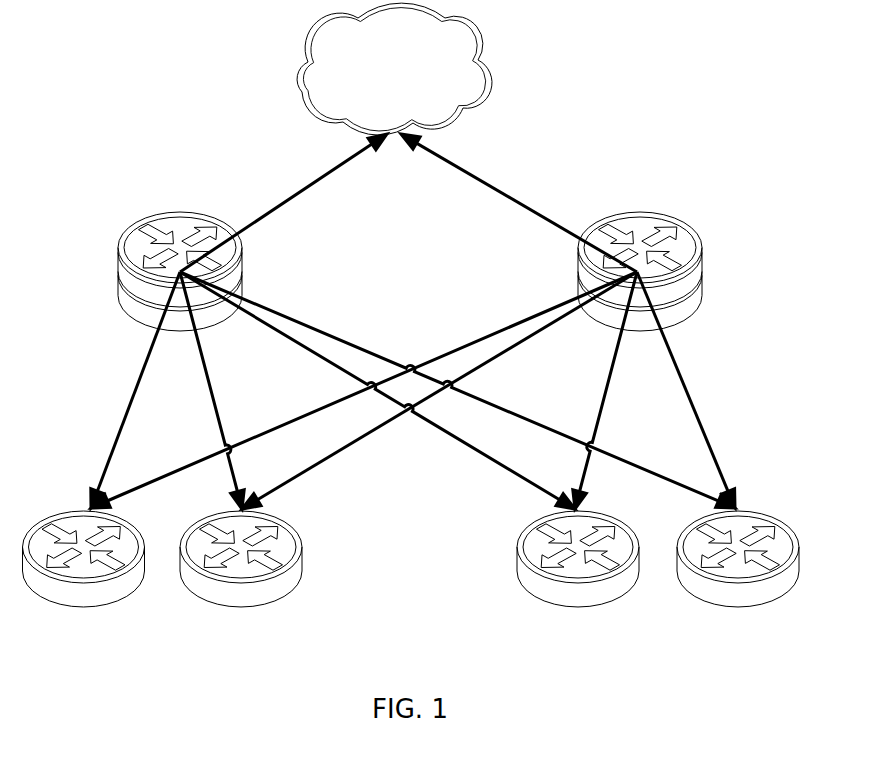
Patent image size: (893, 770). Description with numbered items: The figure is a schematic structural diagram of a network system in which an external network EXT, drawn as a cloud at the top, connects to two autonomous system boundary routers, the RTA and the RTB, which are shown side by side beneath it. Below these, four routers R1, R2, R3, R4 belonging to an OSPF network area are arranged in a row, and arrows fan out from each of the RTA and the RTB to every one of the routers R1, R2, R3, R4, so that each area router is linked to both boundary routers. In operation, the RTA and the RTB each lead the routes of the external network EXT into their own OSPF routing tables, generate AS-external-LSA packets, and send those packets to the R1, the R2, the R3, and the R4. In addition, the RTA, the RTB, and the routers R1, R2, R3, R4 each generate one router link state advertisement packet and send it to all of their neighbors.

The external network EXT is at (394, 69).
The element RTA is at (180, 254).
The element RTB is at (640, 254).
The element R1 is at (84, 582).
The element R2 is at (241, 582).
The element R3 is at (578, 582).
The element R4 is at (738, 582).